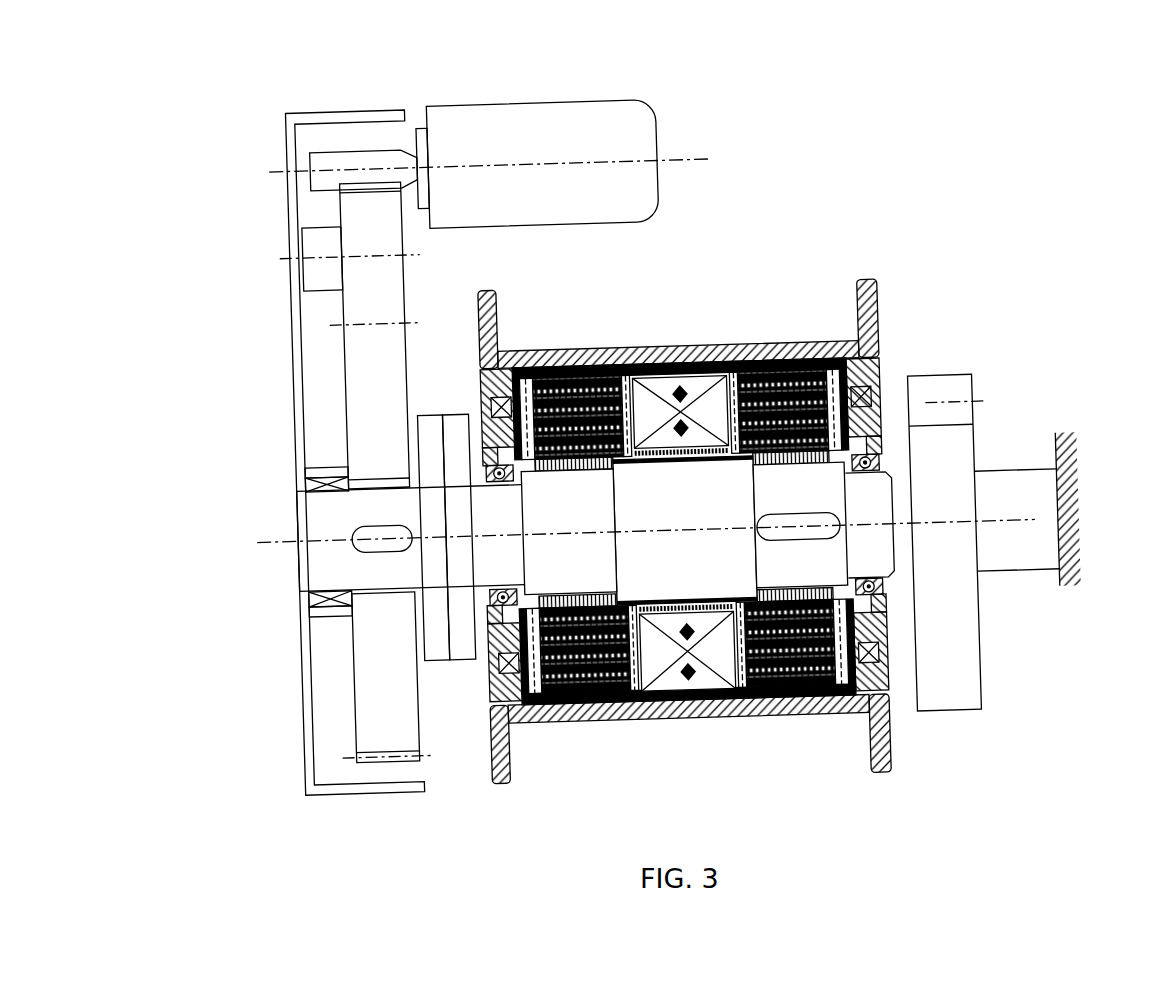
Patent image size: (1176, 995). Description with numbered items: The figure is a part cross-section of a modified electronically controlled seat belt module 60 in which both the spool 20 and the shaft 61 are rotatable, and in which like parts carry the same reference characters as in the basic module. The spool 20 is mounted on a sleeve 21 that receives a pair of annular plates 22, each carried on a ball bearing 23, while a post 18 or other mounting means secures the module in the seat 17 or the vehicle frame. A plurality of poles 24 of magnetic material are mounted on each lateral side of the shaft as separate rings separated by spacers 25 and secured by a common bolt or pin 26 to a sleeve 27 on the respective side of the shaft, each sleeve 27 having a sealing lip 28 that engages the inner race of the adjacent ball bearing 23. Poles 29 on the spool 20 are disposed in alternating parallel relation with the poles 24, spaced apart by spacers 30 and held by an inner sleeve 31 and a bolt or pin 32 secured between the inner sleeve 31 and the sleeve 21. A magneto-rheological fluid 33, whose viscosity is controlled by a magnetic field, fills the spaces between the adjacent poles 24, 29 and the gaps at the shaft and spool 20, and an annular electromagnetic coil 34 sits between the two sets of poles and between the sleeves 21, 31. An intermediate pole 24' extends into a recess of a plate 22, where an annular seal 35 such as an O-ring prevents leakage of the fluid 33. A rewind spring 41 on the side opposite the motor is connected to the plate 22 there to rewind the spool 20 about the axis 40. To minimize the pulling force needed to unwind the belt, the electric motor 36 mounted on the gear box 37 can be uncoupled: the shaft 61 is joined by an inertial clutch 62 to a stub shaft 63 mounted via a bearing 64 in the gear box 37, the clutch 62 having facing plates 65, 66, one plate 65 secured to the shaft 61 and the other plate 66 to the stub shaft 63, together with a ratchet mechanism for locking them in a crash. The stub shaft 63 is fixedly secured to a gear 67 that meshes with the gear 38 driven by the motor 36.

The seat 17 is at (1079, 567).
The post 18 is at (1011, 490).
The spool 20 is at (695, 714).
The sleeve 21 is at (590, 360).
The annular plate 22 is at (884, 406).
The ball bearing 23 is at (886, 441).
The pole 24 is at (682, 497).
The intermediate pole 24' is at (754, 523).
The spacer 25 is at (789, 468).
The bolt or pin 26 is at (823, 351).
The sleeve 27 is at (799, 469).
The sealing lip 28 is at (835, 473).
The pole 29 is at (752, 467).
The spacer 30 is at (744, 452).
The inner sleeve 31 is at (699, 463).
The bolt or pin 32 is at (733, 366).
The magneto-rheological fluid 33 is at (769, 456).
The electromagnetic coil 34 is at (668, 674).
The annular seal 35 is at (878, 694).
The electric motor 36 is at (547, 126).
The gear box 37 is at (299, 123).
The gear 38 is at (384, 224).
The axis 40 is at (277, 533).
The rewind spring 41 is at (952, 466).
The module 60 is at (1076, 200).
The rotatable shaft 61 is at (872, 558).
The inertial clutch 62 is at (470, 318).
The stub shaft 63 is at (326, 561).
The bearing 64 is at (301, 592).
The clutch plate 65 is at (459, 648).
The clutch plate 66 is at (430, 645).
The gear 67 is at (368, 684).